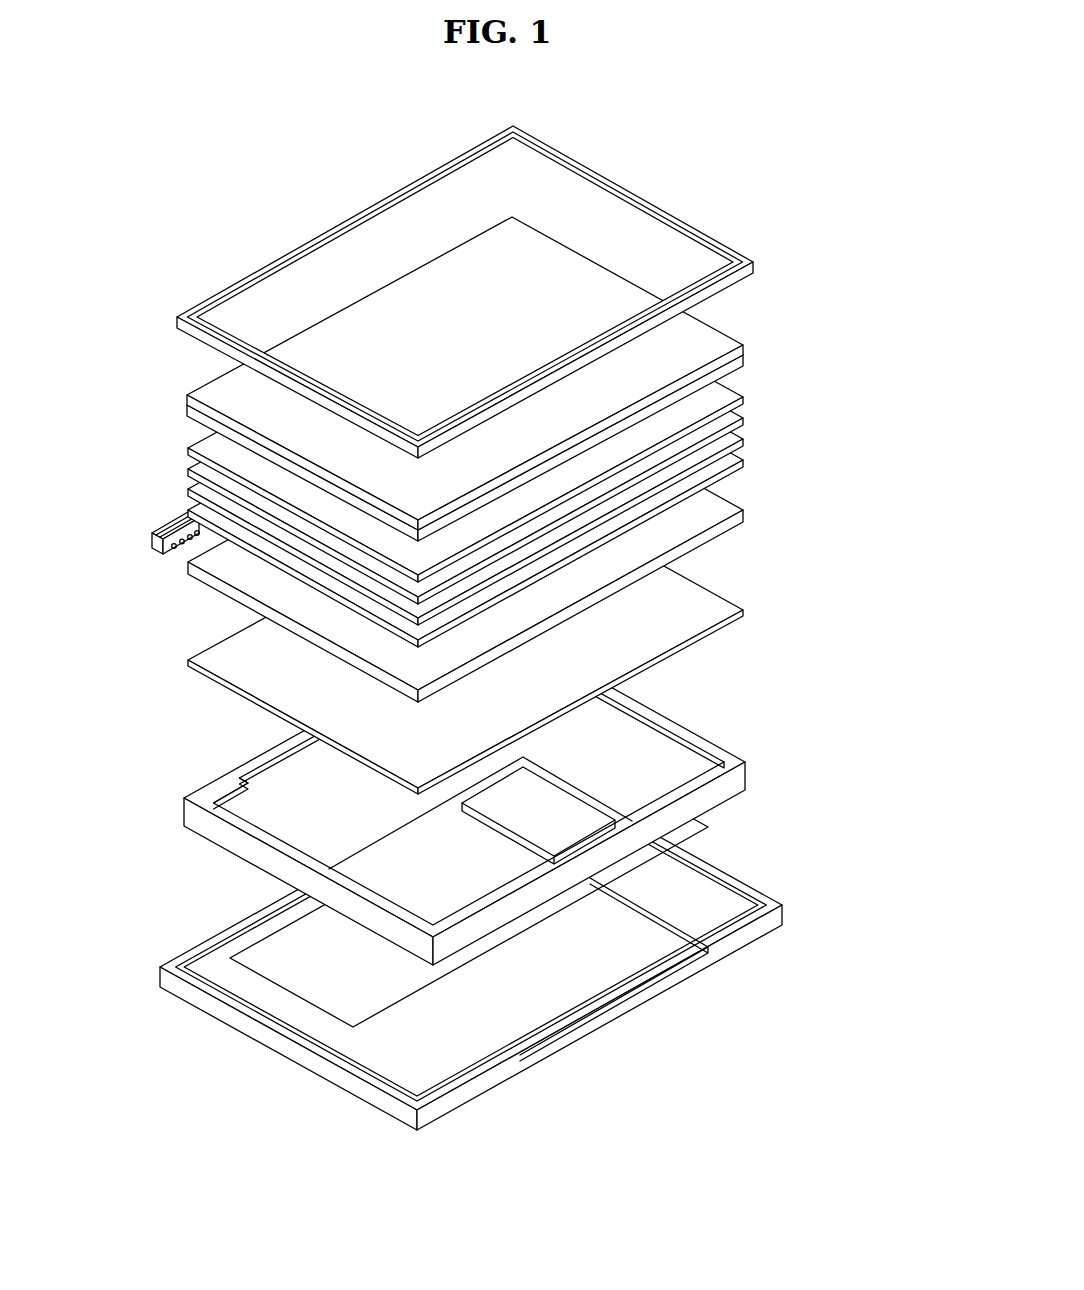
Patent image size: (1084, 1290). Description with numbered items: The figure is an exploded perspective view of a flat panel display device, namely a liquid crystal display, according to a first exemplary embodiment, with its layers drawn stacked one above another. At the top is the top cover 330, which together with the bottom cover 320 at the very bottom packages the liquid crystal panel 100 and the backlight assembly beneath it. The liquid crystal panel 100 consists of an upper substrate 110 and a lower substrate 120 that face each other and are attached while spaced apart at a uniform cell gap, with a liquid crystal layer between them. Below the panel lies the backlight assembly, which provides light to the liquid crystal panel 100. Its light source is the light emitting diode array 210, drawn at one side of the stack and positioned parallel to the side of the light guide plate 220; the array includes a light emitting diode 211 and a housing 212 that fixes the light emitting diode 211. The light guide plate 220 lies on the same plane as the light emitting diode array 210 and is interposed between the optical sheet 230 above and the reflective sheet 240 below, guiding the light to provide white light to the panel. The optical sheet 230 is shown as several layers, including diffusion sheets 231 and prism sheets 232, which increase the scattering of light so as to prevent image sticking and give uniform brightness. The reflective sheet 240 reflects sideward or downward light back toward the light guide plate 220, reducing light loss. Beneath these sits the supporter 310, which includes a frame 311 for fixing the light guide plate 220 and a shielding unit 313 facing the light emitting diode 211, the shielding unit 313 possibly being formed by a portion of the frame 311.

The liquid crystal panel 100 is at (545, 379).
The upper substrate 110 is at (746, 346).
The lower substrate 120 is at (746, 357).
The light emitting diode array 210 is at (133, 509).
The light emitting diode 211 is at (178, 528).
The housing 212 is at (158, 528).
The light guide plate 220 is at (746, 511).
The optical sheet 230 is at (558, 458).
The diffusion sheet 231 is at (517, 458).
The prism sheet 232 is at (746, 418).
The reflective sheet 240 is at (746, 611).
The supporter 310 is at (493, 794).
The frame 311 is at (228, 838).
The shielding unit 313 is at (228, 793).
The bottom cover 320 is at (785, 903).
The top cover 330 is at (756, 262).